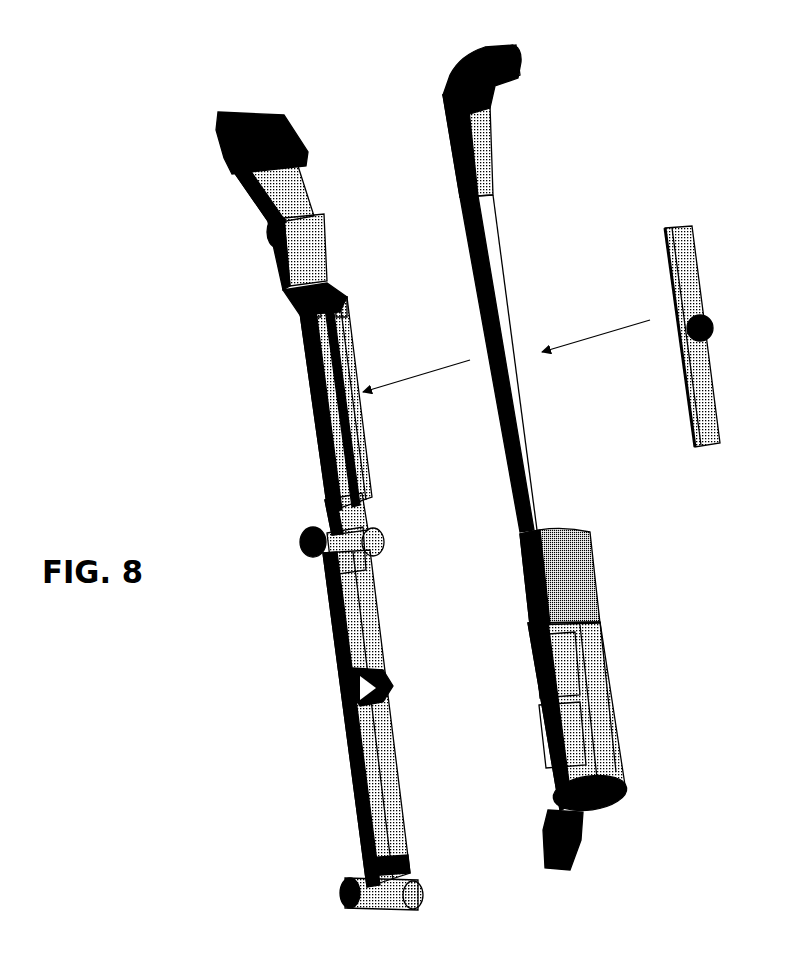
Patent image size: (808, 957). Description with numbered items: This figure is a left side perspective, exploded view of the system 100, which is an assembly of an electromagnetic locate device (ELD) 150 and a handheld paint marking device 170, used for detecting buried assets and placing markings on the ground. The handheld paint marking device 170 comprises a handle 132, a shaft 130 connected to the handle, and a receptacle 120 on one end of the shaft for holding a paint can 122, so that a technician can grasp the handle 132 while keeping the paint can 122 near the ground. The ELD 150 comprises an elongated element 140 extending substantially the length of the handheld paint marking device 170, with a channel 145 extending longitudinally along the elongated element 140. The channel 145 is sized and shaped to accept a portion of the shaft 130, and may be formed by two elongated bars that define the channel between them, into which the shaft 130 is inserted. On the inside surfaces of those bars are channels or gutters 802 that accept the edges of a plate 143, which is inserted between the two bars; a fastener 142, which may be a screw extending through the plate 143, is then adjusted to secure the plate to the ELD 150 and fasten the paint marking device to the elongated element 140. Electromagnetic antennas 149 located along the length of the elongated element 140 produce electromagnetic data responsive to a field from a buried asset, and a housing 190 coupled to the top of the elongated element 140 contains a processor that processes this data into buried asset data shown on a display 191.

The system 100 is at (370, 38).
The receptacle 120 is at (605, 672).
The paint can 122 is at (574, 537).
The shaft 130 is at (524, 288).
The handle 132 is at (510, 83).
The elongated element 140 is at (367, 718).
The fastener 142 is at (714, 328).
The plate 143 is at (672, 228).
The channel 145 is at (355, 435).
The electromagnetic antennas 149 is at (323, 226).
The electromagnetic locate device (ELD) 150 is at (362, 813).
The handheld paint marking device 170 is at (502, 267).
The housing 190 is at (278, 142).
The display 191 is at (263, 117).
The channels or gutters 802 is at (338, 493).